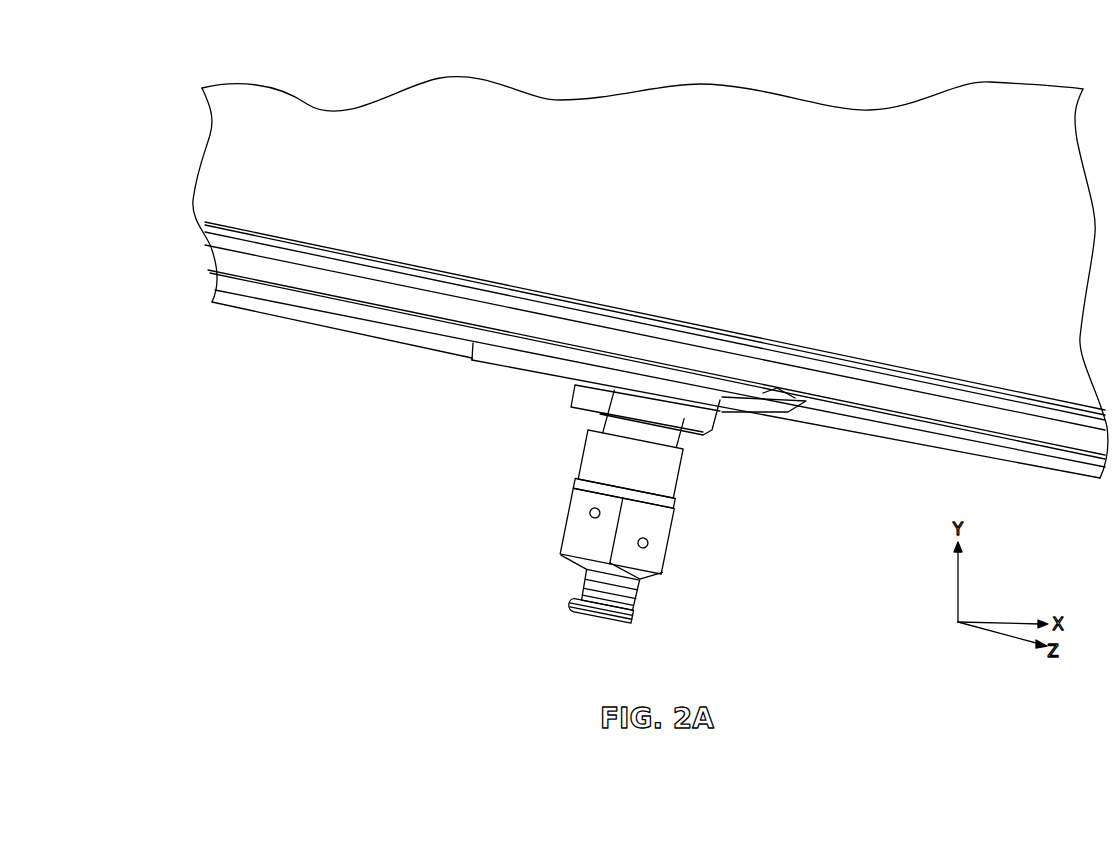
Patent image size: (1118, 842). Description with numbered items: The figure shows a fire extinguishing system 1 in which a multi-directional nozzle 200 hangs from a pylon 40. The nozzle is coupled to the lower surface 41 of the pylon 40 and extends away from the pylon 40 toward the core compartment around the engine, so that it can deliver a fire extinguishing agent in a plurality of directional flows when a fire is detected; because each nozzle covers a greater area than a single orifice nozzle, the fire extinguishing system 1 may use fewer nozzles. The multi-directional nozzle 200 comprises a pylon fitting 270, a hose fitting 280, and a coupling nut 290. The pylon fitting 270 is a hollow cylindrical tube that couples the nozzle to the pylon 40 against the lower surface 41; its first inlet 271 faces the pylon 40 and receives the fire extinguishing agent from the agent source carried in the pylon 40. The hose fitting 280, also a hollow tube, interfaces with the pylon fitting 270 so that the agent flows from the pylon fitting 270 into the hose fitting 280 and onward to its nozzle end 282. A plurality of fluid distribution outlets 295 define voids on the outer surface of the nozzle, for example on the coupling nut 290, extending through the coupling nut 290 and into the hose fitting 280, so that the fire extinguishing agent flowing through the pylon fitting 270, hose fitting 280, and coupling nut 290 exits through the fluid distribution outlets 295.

The fire extinguishing system 1 is at (160, 125).
The pylon 40 is at (465, 245).
The lower surface 41 is at (830, 408).
The multi-directional nozzle 200 is at (500, 456).
The pylon fitting 270 is at (656, 436).
The first inlet 271 is at (600, 393).
The hose fitting 280 is at (588, 577).
The nozzle end 282 is at (586, 618).
The coupling nut 290 is at (654, 568).
The fluid distribution outlets 295 is at (589, 514).